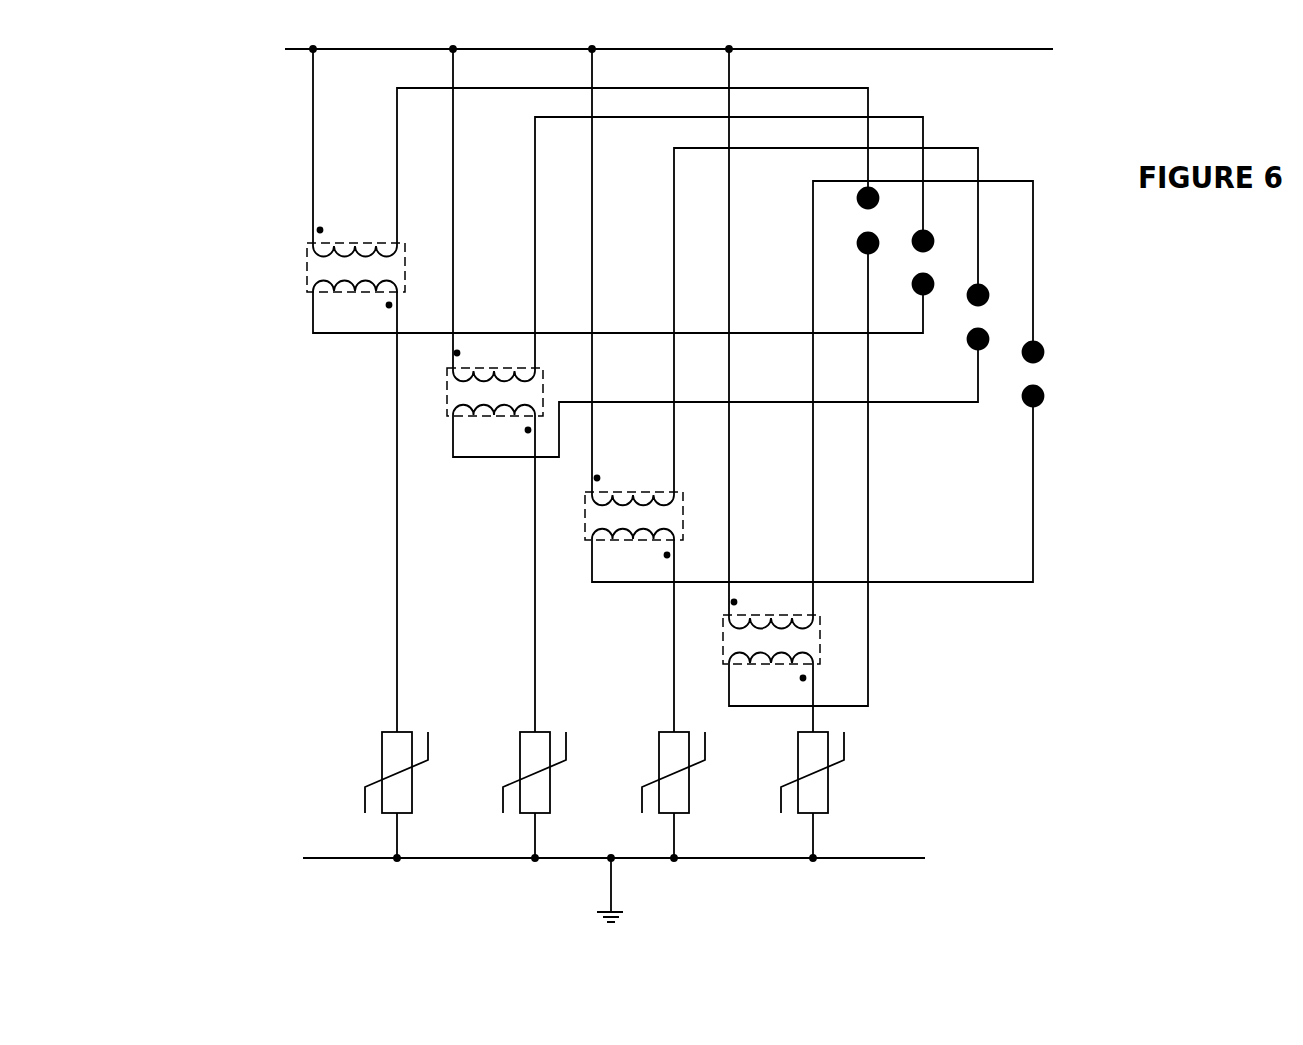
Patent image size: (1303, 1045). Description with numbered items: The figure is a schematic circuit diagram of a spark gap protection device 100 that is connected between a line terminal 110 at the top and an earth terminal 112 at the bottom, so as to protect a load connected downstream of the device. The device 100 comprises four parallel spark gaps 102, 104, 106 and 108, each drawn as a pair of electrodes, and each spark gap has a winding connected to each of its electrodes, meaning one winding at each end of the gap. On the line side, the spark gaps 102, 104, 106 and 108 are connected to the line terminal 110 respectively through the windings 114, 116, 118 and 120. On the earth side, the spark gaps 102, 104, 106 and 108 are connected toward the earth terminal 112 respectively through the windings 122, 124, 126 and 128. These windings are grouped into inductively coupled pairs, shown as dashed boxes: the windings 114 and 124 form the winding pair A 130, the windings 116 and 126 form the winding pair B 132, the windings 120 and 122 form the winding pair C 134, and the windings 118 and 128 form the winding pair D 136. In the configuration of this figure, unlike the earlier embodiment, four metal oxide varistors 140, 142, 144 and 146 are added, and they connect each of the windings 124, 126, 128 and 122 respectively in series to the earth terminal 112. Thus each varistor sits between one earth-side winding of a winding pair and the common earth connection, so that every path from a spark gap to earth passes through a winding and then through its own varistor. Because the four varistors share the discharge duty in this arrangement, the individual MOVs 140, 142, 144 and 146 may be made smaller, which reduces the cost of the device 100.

The spark gap protection device 100 is at (258, 157).
The spark gap 102 is at (850, 221).
The spark gap 104 is at (909, 263).
The spark gap 106 is at (961, 317).
The spark gap 108 is at (1019, 374).
The line terminal 110 is at (1005, 48).
The earth terminal 112 is at (623, 912).
The winding 114 is at (355, 237).
The winding 116 is at (494, 361).
The winding 118 is at (633, 485).
The winding 120 is at (771, 609).
The winding 122 is at (771, 672).
The winding 124 is at (355, 299).
The winding 126 is at (494, 423).
The winding 128 is at (633, 548).
The winding pair A 130 is at (307, 247).
The winding pair B 132 is at (447, 372).
The winding pair C 134 is at (722, 619).
The winding pair D 136 is at (585, 496).
The metal oxide varistor 140 is at (380, 743).
The metal oxide varistor 142 is at (518, 743).
The metal oxide varistor 144 is at (657, 743).
The metal oxide varistor 146 is at (796, 742).